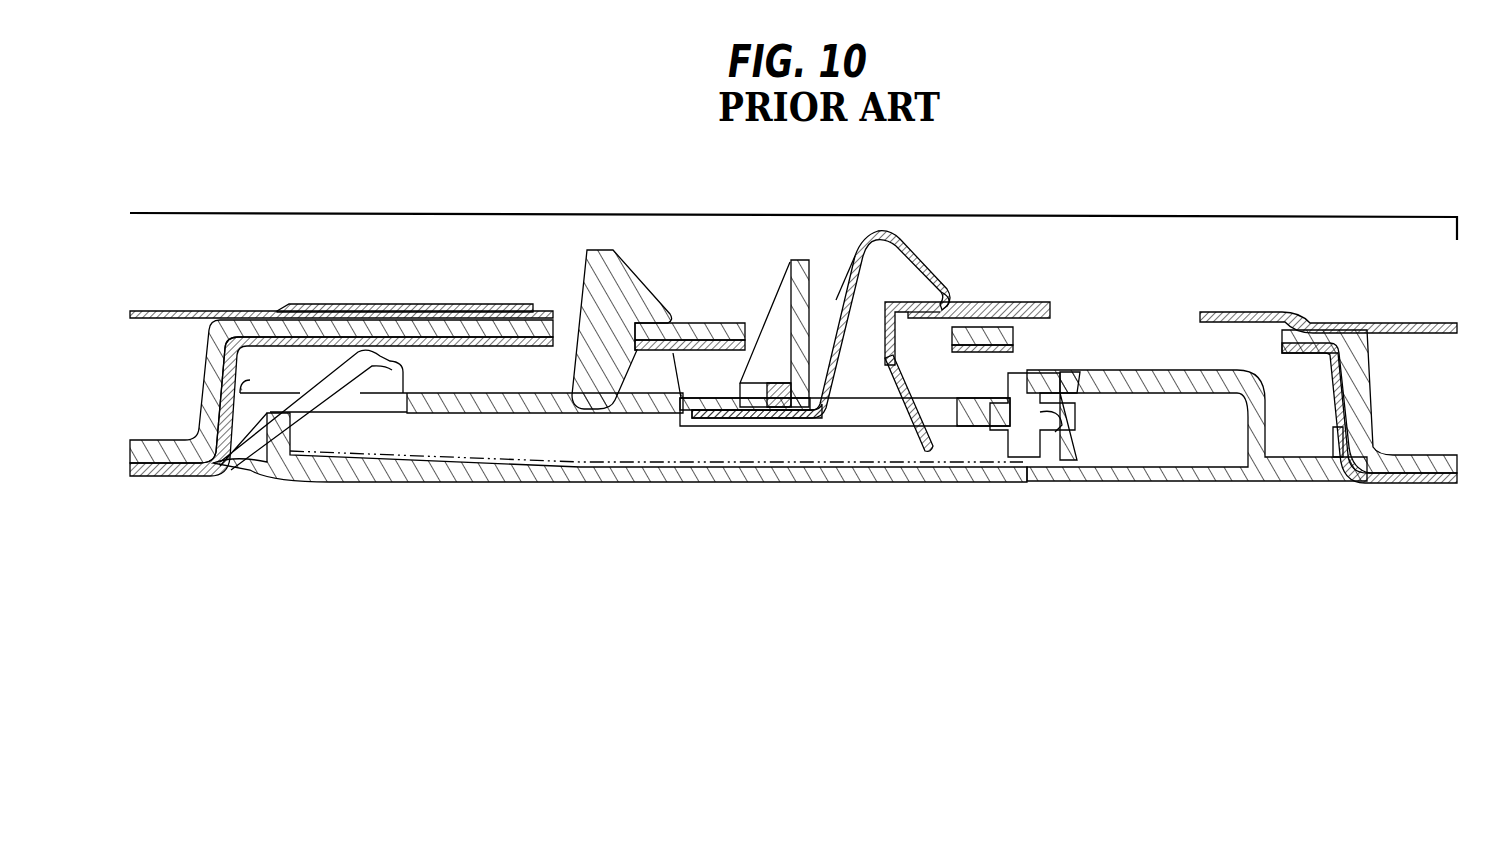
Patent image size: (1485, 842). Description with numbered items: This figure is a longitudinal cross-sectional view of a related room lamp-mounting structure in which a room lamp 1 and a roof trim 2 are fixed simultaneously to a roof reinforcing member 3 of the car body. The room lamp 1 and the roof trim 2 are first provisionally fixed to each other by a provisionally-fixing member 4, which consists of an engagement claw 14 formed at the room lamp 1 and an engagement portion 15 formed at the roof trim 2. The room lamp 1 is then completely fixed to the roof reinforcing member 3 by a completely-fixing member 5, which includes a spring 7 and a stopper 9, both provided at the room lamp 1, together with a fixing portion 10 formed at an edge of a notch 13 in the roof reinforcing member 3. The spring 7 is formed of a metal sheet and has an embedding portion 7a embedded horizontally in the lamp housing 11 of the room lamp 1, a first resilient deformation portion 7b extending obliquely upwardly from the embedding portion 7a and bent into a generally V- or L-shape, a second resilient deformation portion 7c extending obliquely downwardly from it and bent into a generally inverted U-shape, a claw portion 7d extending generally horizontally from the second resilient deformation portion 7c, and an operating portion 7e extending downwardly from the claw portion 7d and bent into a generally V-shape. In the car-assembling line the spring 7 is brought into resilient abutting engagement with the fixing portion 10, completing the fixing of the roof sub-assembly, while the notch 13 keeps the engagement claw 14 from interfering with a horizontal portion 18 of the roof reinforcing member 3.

The room lamp 1 is at (493, 486).
The roof trim 2 is at (178, 480).
The roof reinforcing member 3 is at (1099, 214).
The provisionally-fixing member 4 is at (645, 270).
The completely-fixing member 5 is at (913, 238).
The spring 7 is at (928, 256).
The embedding portion 7a is at (772, 427).
The first resilient deformation portion 7b is at (843, 340).
The second resilient deformation portion 7c is at (950, 283).
The claw portion 7d is at (940, 330).
The operating portion 7e is at (918, 458).
The stopper 9 is at (800, 262).
The fixing portion 10 is at (920, 320).
The lamp housing 11 is at (740, 427).
The notch 13 is at (533, 308).
The engagement claw 14 is at (667, 302).
The engagement portion 15 is at (660, 355).
The horizontal portion 18 is at (410, 304).